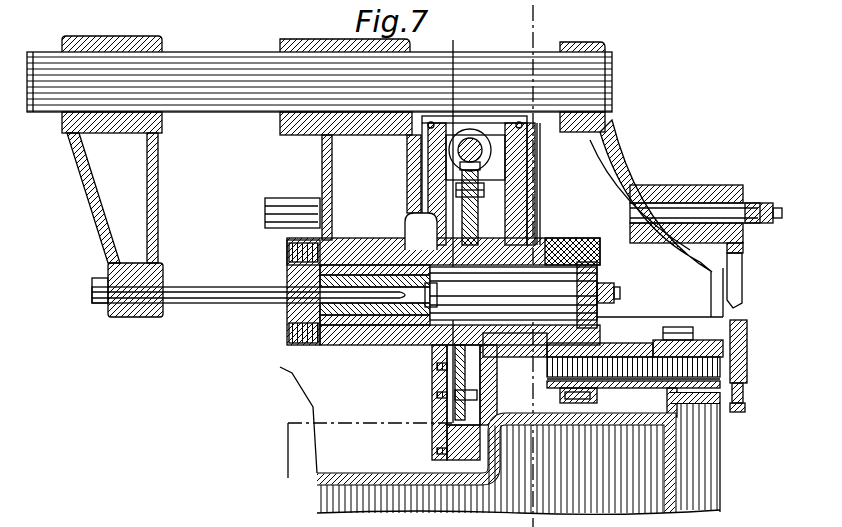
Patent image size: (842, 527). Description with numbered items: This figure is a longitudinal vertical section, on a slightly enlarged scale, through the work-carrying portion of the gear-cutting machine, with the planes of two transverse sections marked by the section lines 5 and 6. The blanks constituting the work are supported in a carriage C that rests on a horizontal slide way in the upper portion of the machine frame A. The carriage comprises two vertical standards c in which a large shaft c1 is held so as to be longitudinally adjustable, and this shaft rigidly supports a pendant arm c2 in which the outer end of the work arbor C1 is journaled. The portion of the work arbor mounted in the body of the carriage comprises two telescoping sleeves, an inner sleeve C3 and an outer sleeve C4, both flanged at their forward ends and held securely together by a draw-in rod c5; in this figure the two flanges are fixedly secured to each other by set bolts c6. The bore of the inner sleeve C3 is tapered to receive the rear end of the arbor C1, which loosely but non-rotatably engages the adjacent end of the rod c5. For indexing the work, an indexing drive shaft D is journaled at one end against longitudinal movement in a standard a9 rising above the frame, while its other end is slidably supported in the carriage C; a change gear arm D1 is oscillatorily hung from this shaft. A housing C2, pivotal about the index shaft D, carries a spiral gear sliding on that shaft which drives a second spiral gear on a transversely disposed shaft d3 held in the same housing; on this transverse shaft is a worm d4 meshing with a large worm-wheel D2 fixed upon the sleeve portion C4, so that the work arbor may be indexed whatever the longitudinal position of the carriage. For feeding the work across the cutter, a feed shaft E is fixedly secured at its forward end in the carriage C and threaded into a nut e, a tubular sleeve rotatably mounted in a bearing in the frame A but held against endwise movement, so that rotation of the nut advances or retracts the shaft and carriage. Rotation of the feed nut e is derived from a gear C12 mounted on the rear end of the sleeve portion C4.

The work arbor C1 is at (223, 67).
The vertical standards c is at (333, 76).
The carriage C is at (656, 218).
The housing C2 is at (159, 189).
The indexing drive shaft D is at (290, 199).
The standard a9 is at (644, 190).
The change gear arm D1 is at (741, 300).
The worm d4 is at (487, 150).
The transverse shaft d3 is at (503, 171).
The worm-wheel D2 is at (480, 208).
The set bolts c6 is at (268, 353).
The inner sleeve C3 is at (372, 346).
The draw-in rod c5 is at (548, 292).
The gear C12 is at (556, 252).
The outer sleeve C4 is at (432, 348).
The feed shaft E is at (630, 343).
The nut e is at (609, 344).
The pendant arm c2 is at (748, 341).
The shaft c1 is at (550, 386).
The machine frame A is at (584, 496).
The section line 5- 5 is at (432, 42).
The section line 6- 6 is at (505, 8).